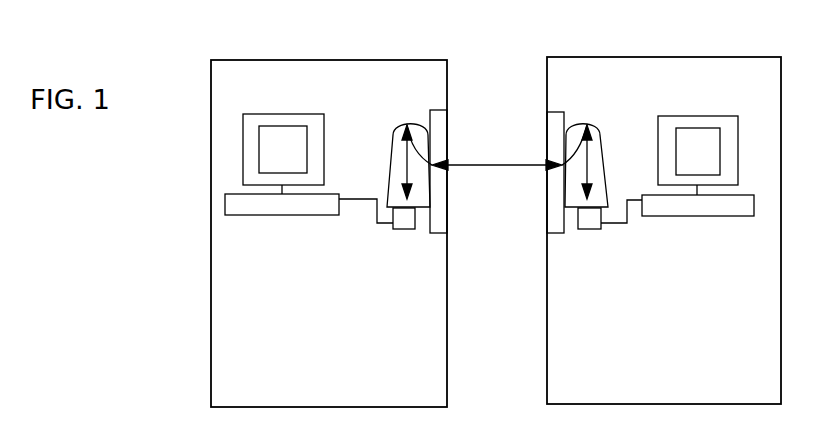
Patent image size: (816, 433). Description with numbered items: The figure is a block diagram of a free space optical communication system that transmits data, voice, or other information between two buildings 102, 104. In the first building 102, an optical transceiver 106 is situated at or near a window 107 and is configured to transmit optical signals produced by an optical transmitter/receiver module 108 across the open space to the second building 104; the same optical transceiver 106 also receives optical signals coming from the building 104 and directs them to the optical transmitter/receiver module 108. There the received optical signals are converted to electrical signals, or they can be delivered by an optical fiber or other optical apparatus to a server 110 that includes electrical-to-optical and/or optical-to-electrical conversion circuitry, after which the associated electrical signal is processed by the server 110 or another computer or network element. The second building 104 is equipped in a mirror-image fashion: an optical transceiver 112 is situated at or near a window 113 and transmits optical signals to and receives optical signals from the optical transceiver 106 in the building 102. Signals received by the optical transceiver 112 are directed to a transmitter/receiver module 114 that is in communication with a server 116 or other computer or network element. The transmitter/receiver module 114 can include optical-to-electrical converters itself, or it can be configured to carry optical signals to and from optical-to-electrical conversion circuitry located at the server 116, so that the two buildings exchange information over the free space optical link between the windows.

The building 102 is at (328, 60).
The building 104 is at (663, 57).
The optical transceiver 106 is at (393, 135).
The window 107 is at (432, 110).
The optical transmitter/receiver module 108 is at (400, 230).
The server 110 is at (310, 215).
The optical transceiver 112 is at (600, 136).
The window 113 is at (552, 235).
The transmitter/receiver module 114 is at (582, 230).
The server 116 is at (697, 216).